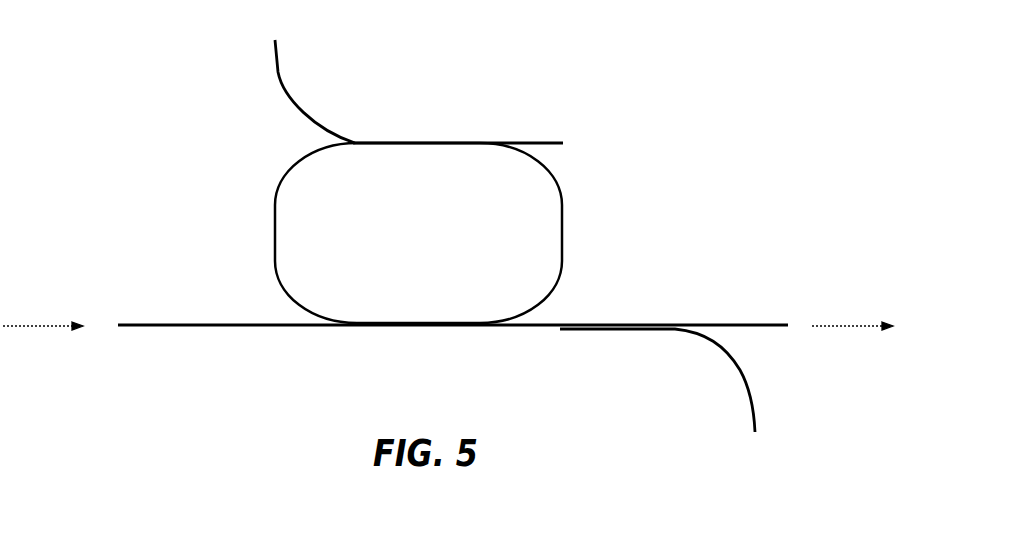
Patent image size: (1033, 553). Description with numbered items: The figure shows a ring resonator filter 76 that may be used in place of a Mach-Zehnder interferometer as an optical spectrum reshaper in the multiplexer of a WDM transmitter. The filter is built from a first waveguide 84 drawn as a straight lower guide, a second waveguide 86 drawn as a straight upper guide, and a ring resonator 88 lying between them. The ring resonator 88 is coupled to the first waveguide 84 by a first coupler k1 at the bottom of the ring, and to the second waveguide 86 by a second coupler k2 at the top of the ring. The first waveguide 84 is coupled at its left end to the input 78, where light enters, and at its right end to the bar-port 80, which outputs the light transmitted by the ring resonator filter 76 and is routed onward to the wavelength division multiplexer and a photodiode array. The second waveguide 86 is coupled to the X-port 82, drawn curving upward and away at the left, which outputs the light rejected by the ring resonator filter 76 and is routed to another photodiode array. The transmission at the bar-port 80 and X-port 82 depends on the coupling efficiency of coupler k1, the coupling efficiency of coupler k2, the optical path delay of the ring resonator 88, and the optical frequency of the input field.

The ring resonator filter 76 is at (625, 65).
The input 78 is at (153, 322).
The bar-port 80 is at (548, 327).
The X-port 82 is at (280, 87).
The first waveguide 84 is at (292, 322).
The second waveguide 86 is at (503, 142).
The ring resonator 88 is at (556, 202).
The first coupler k1 is at (420, 314).
The second coupler k2 is at (380, 136).